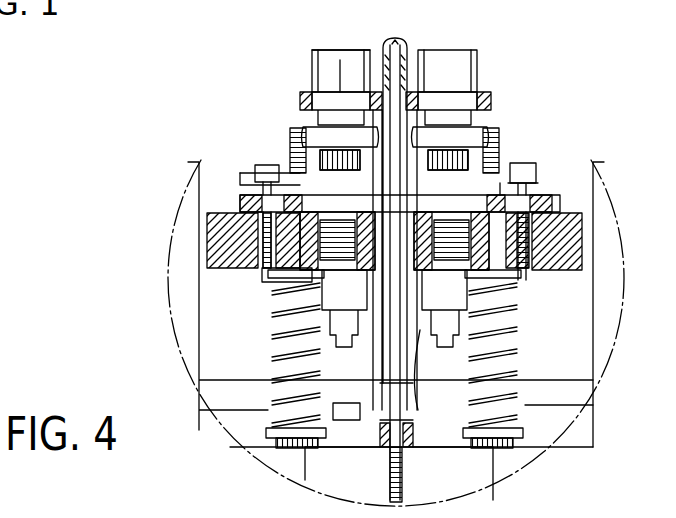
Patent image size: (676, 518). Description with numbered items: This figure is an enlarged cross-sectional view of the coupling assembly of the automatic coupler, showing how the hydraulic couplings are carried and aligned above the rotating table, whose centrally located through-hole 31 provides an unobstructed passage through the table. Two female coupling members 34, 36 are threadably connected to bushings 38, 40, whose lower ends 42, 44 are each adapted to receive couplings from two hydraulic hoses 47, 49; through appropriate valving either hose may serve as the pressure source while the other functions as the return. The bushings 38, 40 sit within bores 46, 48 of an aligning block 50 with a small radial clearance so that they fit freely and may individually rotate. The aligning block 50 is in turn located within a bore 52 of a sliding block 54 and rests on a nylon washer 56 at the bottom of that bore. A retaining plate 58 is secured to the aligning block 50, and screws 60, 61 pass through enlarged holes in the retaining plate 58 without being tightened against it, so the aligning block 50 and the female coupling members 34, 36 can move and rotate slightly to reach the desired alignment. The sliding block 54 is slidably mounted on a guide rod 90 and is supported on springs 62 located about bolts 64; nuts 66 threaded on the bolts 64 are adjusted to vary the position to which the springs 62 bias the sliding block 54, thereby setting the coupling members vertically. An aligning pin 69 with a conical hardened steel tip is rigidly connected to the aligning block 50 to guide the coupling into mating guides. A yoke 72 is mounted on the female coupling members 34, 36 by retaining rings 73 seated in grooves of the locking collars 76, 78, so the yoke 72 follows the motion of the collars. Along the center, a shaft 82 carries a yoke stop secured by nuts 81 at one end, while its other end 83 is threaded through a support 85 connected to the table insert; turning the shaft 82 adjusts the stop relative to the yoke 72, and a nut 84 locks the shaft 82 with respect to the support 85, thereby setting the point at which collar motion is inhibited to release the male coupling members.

The through-hole 31 is at (596, 162).
The female coupling member 34 is at (305, 68).
The female coupling member 36 is at (497, 57).
The bushing 38 is at (330, 300).
The bushing 40 is at (468, 282).
The lower end 42 is at (335, 335).
The lower end 44 is at (490, 310).
The bore 46 is at (305, 273).
The hydraulic hose 47 is at (430, 340).
The bore 48 is at (575, 286).
The hydraulic hose 49 is at (333, 437).
The aligning block 50 is at (525, 163).
The bore 52 is at (262, 226).
The sliding block 54 is at (196, 237).
The nylon washer 56 is at (232, 250).
The retaining plate 58 is at (583, 205).
The screw 60 is at (247, 167).
The screw 61 is at (540, 205).
The spring 62 is at (272, 393).
The bolt 64 is at (287, 360).
The nut 66 is at (287, 157).
The aligning pin 69 is at (400, 38).
The yoke 72 is at (327, 88).
The retaining ring 73 is at (303, 117).
The locking collar 76 is at (313, 52).
The locking collar 78 is at (470, 50).
The nut 81 is at (385, 46).
The shaft 82 is at (403, 478).
The other end 83 is at (440, 470).
The nut 84 is at (408, 452).
The support 85 is at (370, 447).
The guide rod 90 is at (500, 440).